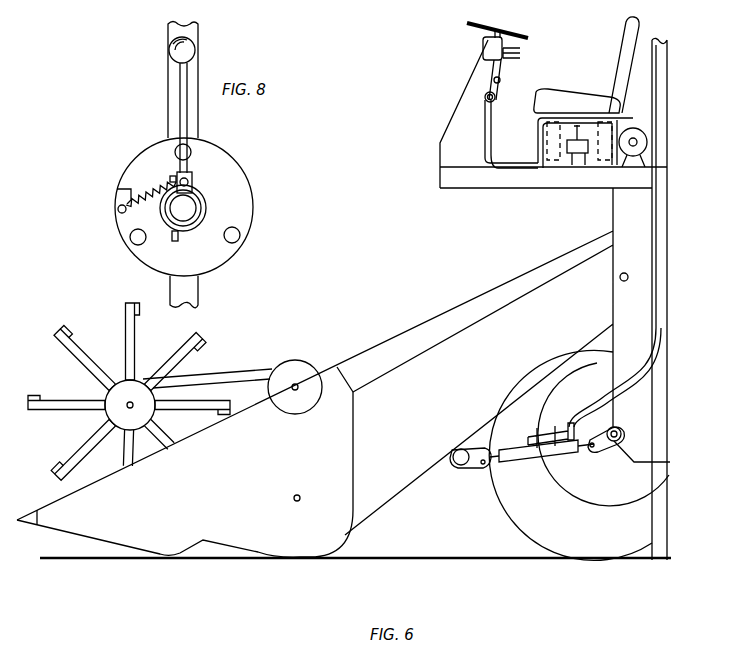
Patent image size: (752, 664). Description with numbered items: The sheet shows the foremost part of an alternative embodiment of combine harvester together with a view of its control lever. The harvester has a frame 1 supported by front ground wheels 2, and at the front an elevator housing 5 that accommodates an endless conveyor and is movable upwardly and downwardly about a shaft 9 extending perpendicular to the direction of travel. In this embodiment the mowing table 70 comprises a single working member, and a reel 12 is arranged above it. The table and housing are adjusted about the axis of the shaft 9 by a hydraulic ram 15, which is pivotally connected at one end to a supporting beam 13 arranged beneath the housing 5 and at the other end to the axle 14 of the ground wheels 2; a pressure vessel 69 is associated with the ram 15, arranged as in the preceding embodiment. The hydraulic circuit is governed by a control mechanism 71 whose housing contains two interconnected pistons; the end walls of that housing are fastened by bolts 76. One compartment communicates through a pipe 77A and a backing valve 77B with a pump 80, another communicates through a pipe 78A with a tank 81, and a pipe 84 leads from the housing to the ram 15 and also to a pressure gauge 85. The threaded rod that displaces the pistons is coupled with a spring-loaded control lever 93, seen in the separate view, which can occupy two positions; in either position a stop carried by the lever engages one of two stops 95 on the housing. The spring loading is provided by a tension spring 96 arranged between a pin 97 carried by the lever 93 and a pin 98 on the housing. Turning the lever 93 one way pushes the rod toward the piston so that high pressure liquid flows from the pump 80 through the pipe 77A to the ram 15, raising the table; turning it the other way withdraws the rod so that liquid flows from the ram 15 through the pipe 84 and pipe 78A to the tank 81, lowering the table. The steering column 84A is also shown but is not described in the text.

In FIG. 6, the frame 1 is at (660, 458).
In FIG. 6, the front ground wheels 2 is at (538, 530).
In FIG. 6, the elevator housing 5 is at (428, 332).
In FIG. 6, the shaft 9 is at (620, 279).
In FIG. 6, the reel 12 is at (70, 458).
In FIG. 6, the supporting beam 13 is at (456, 468).
In FIG. 6, the axle 14 is at (622, 434).
In FIG. 6, the hydraulic ram 15 is at (516, 462).
In FIG. 6, the pressure vessel 69 is at (530, 440).
In FIG. 6, the mowing table 70 is at (260, 554).
In FIG. 6, the control mechanism 71 is at (495, 97).
In FIG. 8, the bolts 76 is at (240, 238).
In FIG. 8, the pipe 77A is at (198, 294).
In FIG. 6, the pipe 77A is at (505, 168).
In FIG. 6, the backing valve 77B is at (556, 168).
In FIG. 6, the pipe 78A is at (522, 163).
In FIG. 6, the pump 80 is at (637, 128).
In FIG. 6, the tank 81 is at (590, 169).
In FIG. 8, the pipe 84 is at (168, 99).
In FIG. 6, the pipe 84 is at (532, 170).
In FIG. 6, the steering column 84A is at (483, 56).
In FIG. 6, the pressure gauge 85 is at (520, 52).
In FIG. 6, the control lever 93 is at (500, 82).
In FIG. 8, the stops 95 is at (170, 178).
In FIG. 8, the tension spring 96 is at (117, 190).
In FIG. 8, the pin 97 is at (198, 185).
In FIG. 8, the pin 98 is at (118, 213).